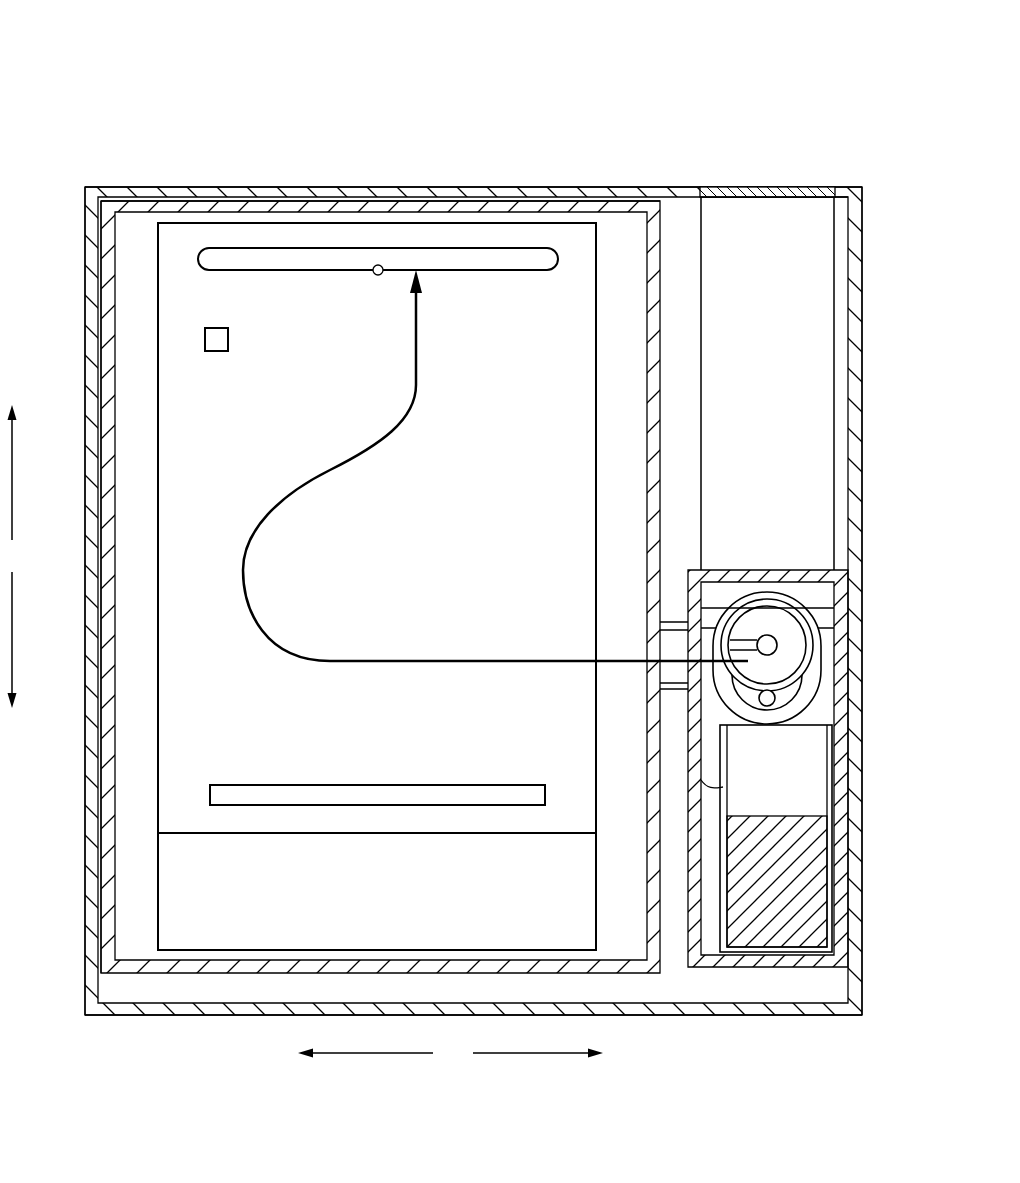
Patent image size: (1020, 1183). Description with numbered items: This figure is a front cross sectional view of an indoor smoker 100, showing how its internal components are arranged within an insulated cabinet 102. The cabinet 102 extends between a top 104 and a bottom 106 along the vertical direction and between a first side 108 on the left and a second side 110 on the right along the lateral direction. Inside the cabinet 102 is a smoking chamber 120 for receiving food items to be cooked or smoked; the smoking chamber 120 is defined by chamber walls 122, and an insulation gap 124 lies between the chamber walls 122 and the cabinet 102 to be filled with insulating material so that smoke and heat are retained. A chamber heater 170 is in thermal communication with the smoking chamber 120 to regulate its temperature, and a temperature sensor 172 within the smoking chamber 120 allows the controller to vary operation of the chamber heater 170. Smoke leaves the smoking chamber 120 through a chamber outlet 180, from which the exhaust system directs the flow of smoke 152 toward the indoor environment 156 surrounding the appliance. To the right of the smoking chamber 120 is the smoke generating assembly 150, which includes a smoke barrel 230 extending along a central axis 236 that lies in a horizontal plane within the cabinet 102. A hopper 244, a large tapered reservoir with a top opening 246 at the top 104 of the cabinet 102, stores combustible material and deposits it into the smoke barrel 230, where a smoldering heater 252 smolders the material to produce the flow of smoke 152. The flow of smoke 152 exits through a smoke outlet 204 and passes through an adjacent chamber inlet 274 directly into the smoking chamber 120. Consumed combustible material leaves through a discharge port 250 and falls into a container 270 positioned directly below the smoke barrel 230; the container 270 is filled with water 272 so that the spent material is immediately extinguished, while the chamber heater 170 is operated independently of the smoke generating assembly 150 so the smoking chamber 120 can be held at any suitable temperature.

The indoor smoker 100 is at (709, 95).
The insulated cabinet 102 is at (85, 422).
The top 104 is at (153, 176).
The bottom 106 is at (139, 1022).
The first side 108 is at (75, 275).
The second side 110 is at (873, 268).
The smoking chamber 120 is at (352, 565).
The chamber walls 122 is at (105, 540).
The insulation gap 124 is at (81, 738).
The smoke generating assembly 150 is at (834, 667).
The flow of smoke 152 is at (418, 395).
The indoor environment 156 is at (522, 123).
The chamber heater 170 is at (363, 783).
The temperature sensor 172 is at (216, 352).
The chamber outlet 180 is at (291, 246).
The smoke outlet 204 is at (792, 614).
The smoke barrel 230 is at (810, 630).
The central axis 236 is at (762, 636).
The hopper 244 is at (744, 315).
The top opening 246 is at (790, 176).
The discharge port 250 is at (772, 600).
The smoldering heater 252 is at (776, 700).
The container 270 is at (832, 800).
The water 272 is at (800, 872).
The chamber inlet 274 is at (657, 643).